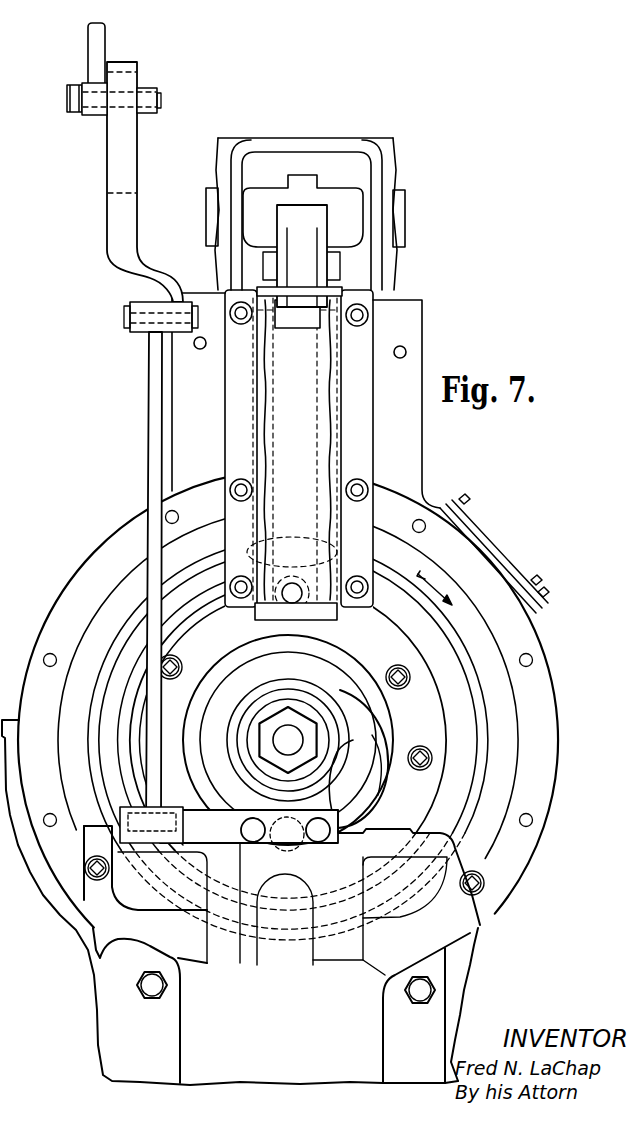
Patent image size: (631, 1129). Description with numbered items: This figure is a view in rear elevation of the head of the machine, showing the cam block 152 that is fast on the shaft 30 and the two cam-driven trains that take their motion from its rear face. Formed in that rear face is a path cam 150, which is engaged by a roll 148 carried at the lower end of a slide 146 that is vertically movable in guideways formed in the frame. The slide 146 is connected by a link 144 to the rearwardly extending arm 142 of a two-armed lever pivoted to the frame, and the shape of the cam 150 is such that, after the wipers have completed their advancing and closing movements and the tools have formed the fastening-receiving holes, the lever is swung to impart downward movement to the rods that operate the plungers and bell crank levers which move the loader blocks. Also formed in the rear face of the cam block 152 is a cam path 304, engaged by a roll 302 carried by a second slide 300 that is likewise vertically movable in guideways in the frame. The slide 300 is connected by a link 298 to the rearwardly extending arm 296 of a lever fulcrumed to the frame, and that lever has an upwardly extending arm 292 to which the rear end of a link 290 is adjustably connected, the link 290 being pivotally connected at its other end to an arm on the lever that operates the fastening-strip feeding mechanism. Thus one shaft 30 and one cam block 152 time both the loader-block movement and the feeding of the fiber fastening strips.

The shaft 30 is at (276, 739).
The rearwardly extending arm 142 is at (318, 181).
The link 144 is at (308, 259).
The slide 146 is at (340, 291).
The roll 148 is at (337, 613).
The path cam 150 is at (444, 697).
The cam block 152 is at (490, 758).
The link 290 is at (88, 39).
The upwardly extending arm 292 is at (133, 62).
The rearwardly extending arm 296 is at (139, 333).
The link 298 is at (152, 394).
The slide 300 is at (247, 878).
The roll 302 is at (262, 812).
The cam path 304 is at (353, 748).